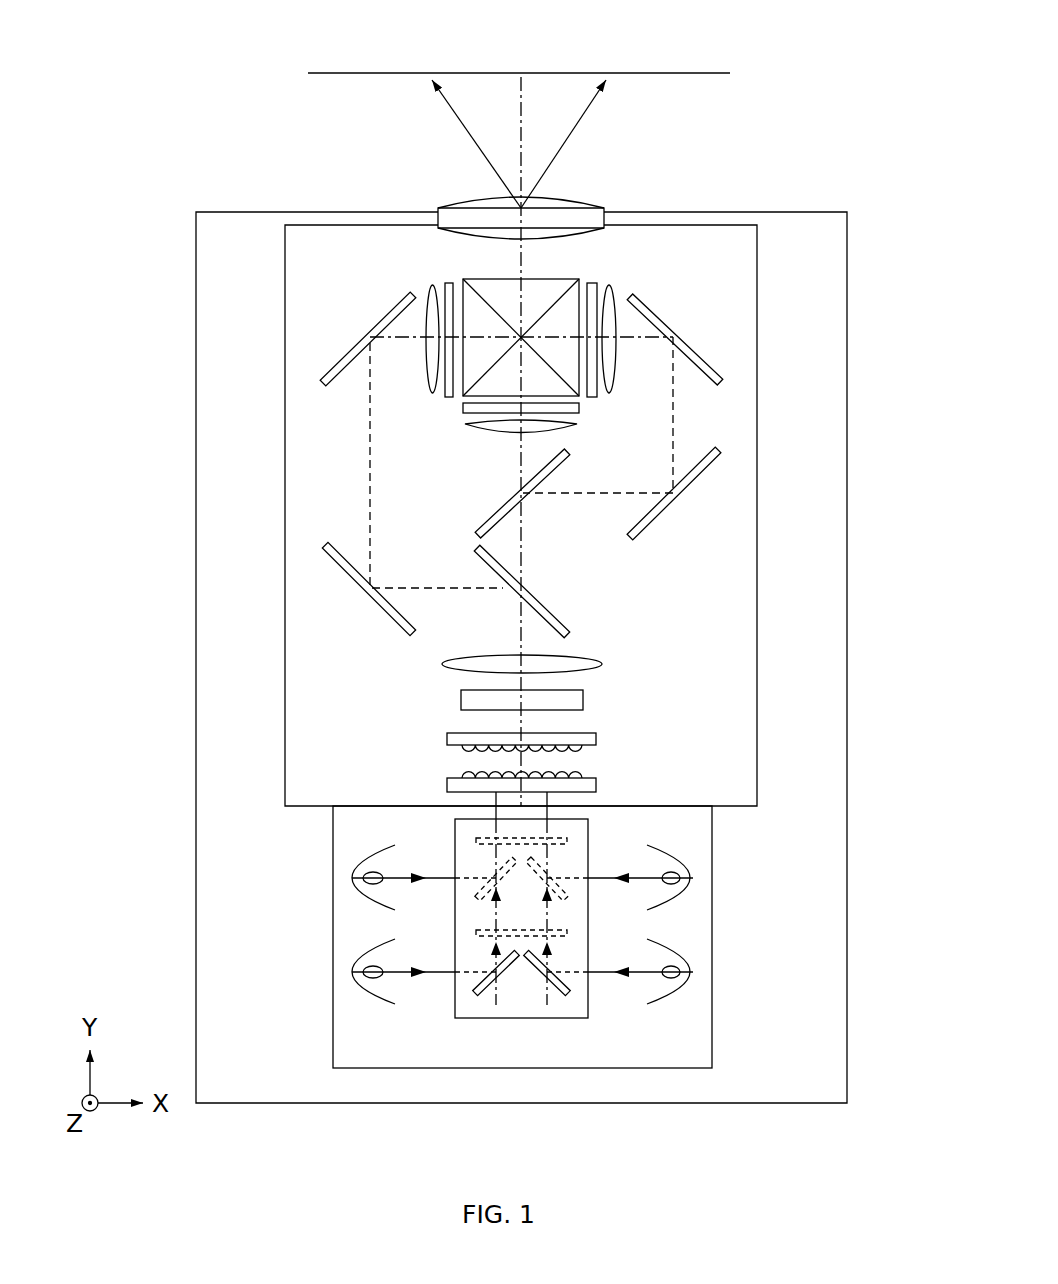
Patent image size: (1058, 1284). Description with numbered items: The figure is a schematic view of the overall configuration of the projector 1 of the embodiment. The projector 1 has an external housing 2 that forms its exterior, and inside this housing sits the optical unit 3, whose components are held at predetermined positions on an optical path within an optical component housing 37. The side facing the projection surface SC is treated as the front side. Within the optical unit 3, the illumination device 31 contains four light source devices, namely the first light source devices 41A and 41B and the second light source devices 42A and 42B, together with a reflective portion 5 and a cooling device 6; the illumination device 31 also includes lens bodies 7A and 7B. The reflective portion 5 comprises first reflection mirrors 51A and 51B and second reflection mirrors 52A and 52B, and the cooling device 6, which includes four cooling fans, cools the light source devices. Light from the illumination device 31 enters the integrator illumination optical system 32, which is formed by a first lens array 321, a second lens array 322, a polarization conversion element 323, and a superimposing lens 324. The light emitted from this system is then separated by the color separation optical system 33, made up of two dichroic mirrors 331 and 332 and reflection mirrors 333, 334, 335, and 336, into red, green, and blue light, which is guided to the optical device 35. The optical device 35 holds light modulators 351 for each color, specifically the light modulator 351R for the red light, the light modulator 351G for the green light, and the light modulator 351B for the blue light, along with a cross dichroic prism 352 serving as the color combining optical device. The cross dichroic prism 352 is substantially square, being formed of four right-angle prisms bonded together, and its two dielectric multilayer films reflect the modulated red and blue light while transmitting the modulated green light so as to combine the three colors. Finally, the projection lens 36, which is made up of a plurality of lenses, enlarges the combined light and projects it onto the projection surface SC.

The projection surface SC is at (690, 72).
The projector 1 is at (852, 186).
The external housing 2 is at (850, 250).
The optical unit 3 is at (784, 310).
The optical component housing 37 is at (759, 390).
The projection lens 36 is at (583, 200).
The optical device 35 is at (634, 290).
The cross dichroic prism 352 is at (500, 288).
The light modulators 351 is at (526, 393).
The light modulator for the B-light 351B is at (448, 397).
The light modulator for the G-light 351G is at (465, 414).
The light modulator for the R-light 351R is at (596, 398).
The color separation optical system 33 is at (540, 545).
The dichroic mirror 331 is at (552, 617).
The dichroic mirror 332 is at (487, 526).
The reflection mirror 333 is at (668, 506).
The reflection mirror 334 is at (667, 326).
The reflection mirror 335 is at (385, 604).
The reflection mirror 336 is at (380, 322).
The integrator illumination optical system 32 is at (436, 763).
The first lens array 321 is at (590, 784).
The second lens array 322 is at (590, 738).
The polarization conversion element 323 is at (575, 700).
The superimposing lens 324 is at (580, 662).
The illumination device 31 is at (713, 1046).
The first light source device 41A is at (344, 957).
The first light source device 41B is at (344, 861).
The second light source device 42A is at (701, 958).
The second light source device 42B is at (701, 862).
The cooling device 6 is at (590, 1010).
The reflective portion 5 is at (527, 960).
The first reflection mirror 51A is at (497, 992).
The first reflection mirror 51B is at (479, 893).
The second reflection mirror 52A is at (548, 992).
The second reflection mirror 52B is at (564, 893).
The lens body 7A is at (560, 940).
The lens body 7B is at (558, 840).